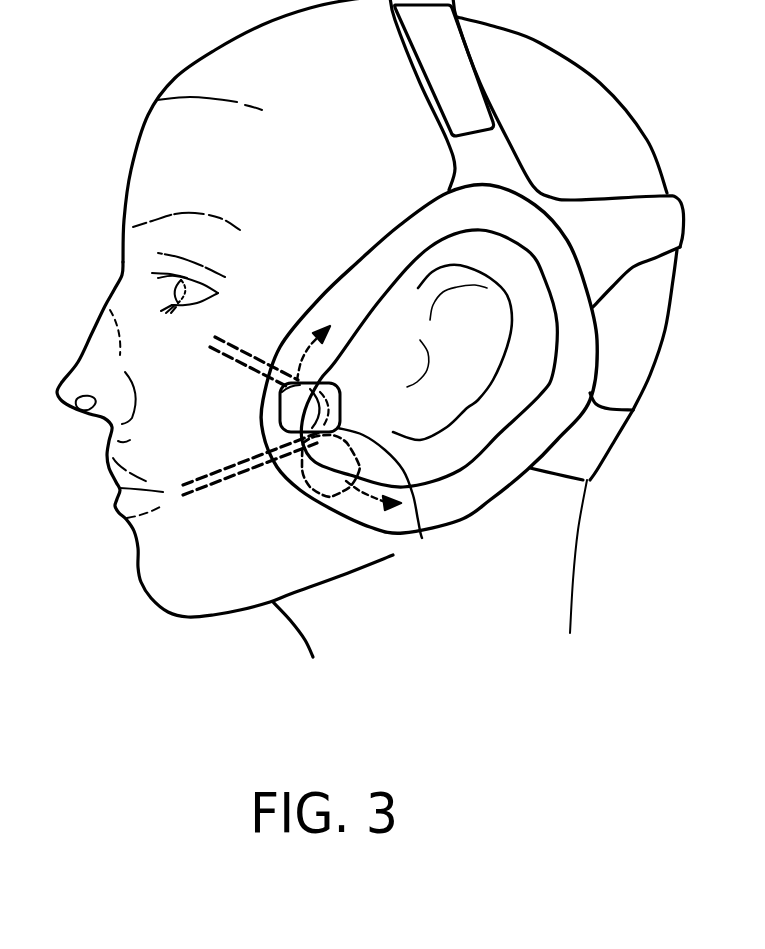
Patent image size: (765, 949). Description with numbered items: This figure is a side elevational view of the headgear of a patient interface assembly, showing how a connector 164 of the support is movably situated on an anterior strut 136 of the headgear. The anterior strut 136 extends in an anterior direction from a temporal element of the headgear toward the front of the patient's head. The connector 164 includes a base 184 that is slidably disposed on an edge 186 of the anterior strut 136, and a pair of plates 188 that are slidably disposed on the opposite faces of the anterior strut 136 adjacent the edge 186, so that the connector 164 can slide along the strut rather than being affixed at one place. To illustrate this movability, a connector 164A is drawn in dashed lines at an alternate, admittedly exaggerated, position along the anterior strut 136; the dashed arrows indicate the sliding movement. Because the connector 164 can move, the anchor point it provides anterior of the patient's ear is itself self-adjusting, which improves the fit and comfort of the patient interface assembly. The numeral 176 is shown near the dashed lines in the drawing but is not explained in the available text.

The anterior strut 136 is at (321, 299).
The edge 186 is at (333, 362).
The base 184 is at (342, 408).
The plate 188 is at (280, 407).
The acoustic path 176 is at (205, 477).
The connector at alternate position 164A is at (320, 478).
The connector 164 is at (422, 538).